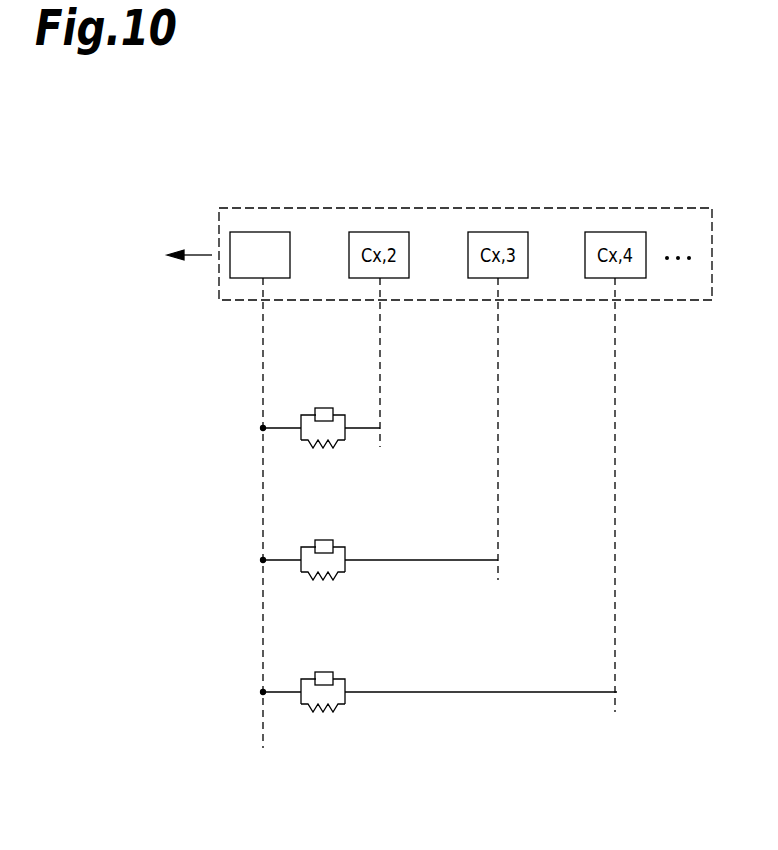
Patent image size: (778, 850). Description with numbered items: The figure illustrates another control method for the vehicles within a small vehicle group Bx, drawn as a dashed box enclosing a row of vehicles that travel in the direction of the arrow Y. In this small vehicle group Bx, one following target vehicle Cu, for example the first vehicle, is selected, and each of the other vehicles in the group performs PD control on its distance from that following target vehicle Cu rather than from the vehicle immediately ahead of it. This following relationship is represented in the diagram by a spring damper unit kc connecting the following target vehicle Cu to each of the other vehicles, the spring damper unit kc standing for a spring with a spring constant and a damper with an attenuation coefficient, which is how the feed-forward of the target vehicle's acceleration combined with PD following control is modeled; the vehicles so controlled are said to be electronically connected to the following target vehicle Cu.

The small vehicle group Bx is at (313, 208).
The following target vehicle Cu is at (257, 232).
The arrow indicating traveling direction Y is at (189, 243).
The spring damper unit kc is at (339, 408).